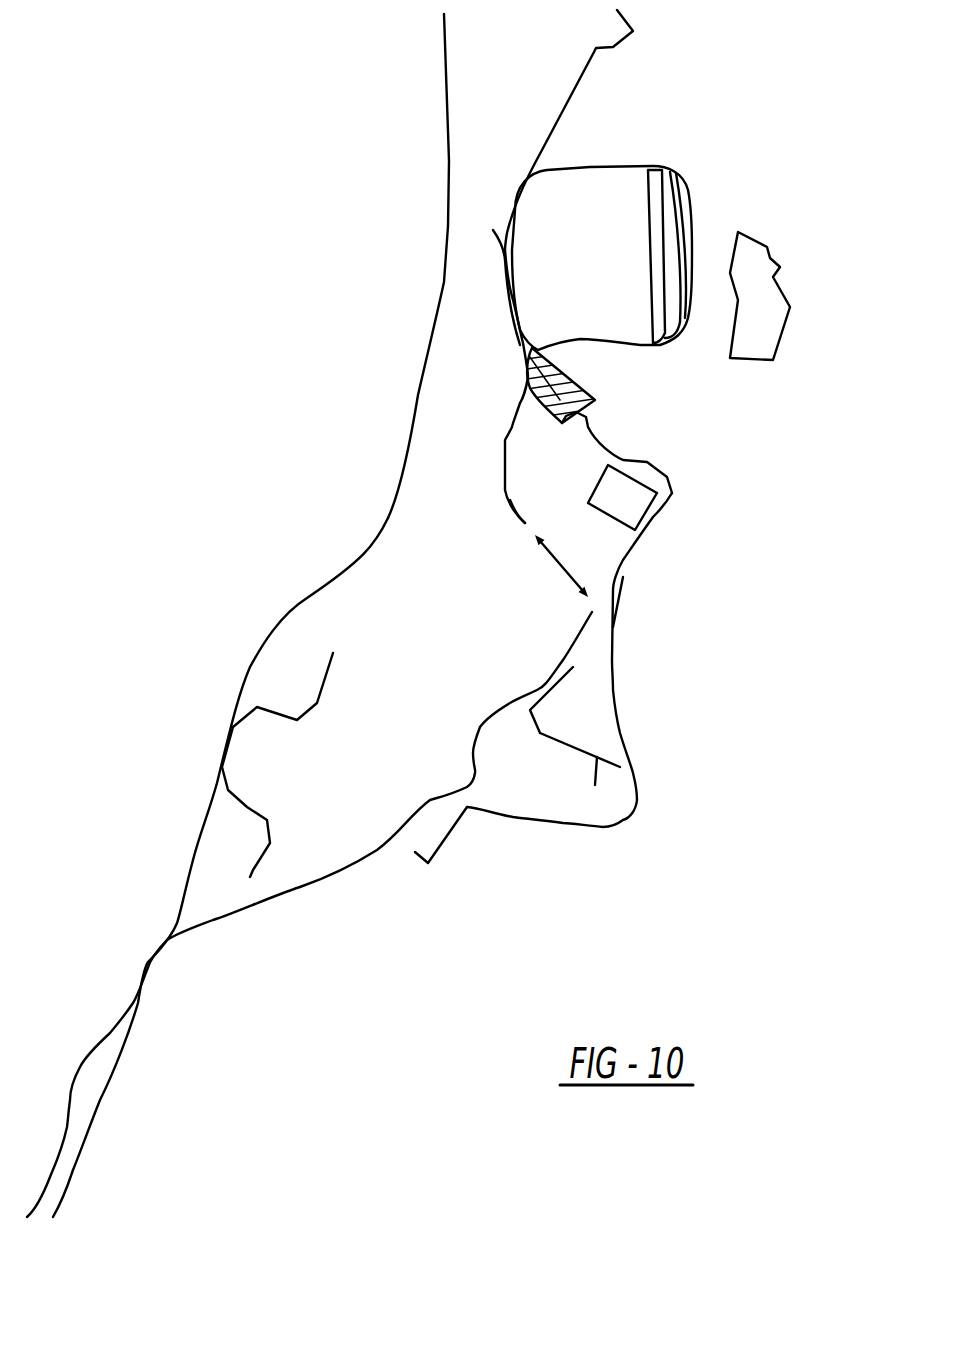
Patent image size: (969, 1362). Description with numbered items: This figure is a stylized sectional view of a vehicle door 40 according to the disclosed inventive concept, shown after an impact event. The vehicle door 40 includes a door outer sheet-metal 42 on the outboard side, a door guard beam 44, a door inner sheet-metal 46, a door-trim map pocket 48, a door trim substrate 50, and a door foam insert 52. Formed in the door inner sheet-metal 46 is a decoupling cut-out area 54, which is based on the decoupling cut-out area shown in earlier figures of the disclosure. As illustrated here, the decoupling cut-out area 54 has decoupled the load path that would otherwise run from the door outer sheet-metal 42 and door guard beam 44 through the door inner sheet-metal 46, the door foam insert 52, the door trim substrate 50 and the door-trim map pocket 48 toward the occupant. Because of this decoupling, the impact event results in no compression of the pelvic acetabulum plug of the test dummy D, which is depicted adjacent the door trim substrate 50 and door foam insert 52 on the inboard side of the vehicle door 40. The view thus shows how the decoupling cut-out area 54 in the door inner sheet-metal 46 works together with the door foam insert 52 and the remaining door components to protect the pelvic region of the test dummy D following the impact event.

The test dummy D is at (620, 187).
The vehicle door 40 is at (288, 404).
The door outer sheet-metal 42 is at (307, 598).
The door guard beam 44 is at (247, 807).
The door inner sheet-metal 46 is at (470, 740).
The door-trim map pocket 48 is at (547, 740).
The door trim substrate 50 is at (635, 801).
The door foam insert 52 is at (572, 378).
The decoupling cut-out area 54 is at (562, 563).